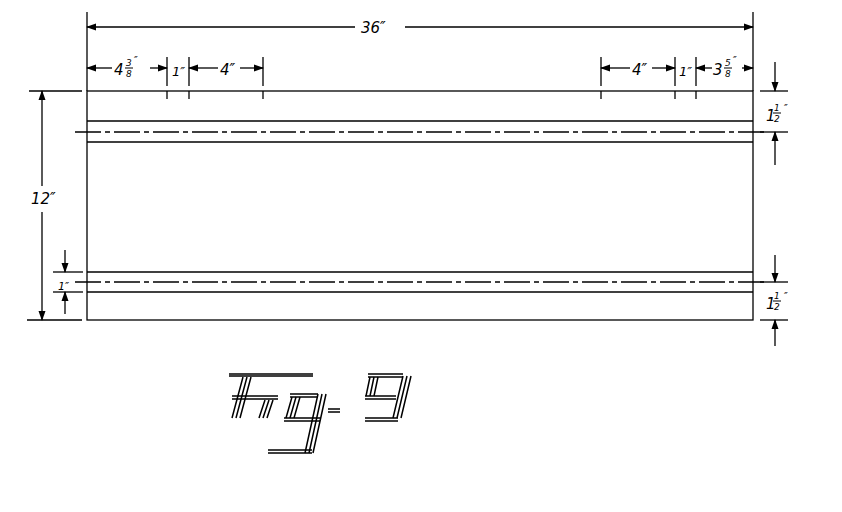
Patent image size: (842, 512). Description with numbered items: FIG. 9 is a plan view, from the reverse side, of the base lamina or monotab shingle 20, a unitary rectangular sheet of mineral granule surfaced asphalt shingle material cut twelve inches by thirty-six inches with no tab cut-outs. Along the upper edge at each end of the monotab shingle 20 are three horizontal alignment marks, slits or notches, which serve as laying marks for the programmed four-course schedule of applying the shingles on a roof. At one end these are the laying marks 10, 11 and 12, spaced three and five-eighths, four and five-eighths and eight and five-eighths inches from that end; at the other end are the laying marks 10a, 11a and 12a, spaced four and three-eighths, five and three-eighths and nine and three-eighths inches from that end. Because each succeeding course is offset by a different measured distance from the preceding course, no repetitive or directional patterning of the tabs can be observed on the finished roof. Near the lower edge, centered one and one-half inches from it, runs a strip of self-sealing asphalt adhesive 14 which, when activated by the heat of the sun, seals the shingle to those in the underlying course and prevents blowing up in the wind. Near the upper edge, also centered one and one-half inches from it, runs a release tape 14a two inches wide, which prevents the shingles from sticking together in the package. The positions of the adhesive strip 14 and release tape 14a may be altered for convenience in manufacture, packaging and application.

The laying mark 10 is at (696, 99).
The laying mark 10a is at (166, 98).
The laying mark 11 is at (675, 99).
The laying mark 11a is at (189, 99).
The laying mark 12 is at (599, 98).
The laying mark 12a is at (263, 99).
The strip of self-sealing asphalt adhesive 14 is at (216, 276).
The release tape 14a is at (510, 135).
The base lamina or monotab shingle 20 is at (405, 225).